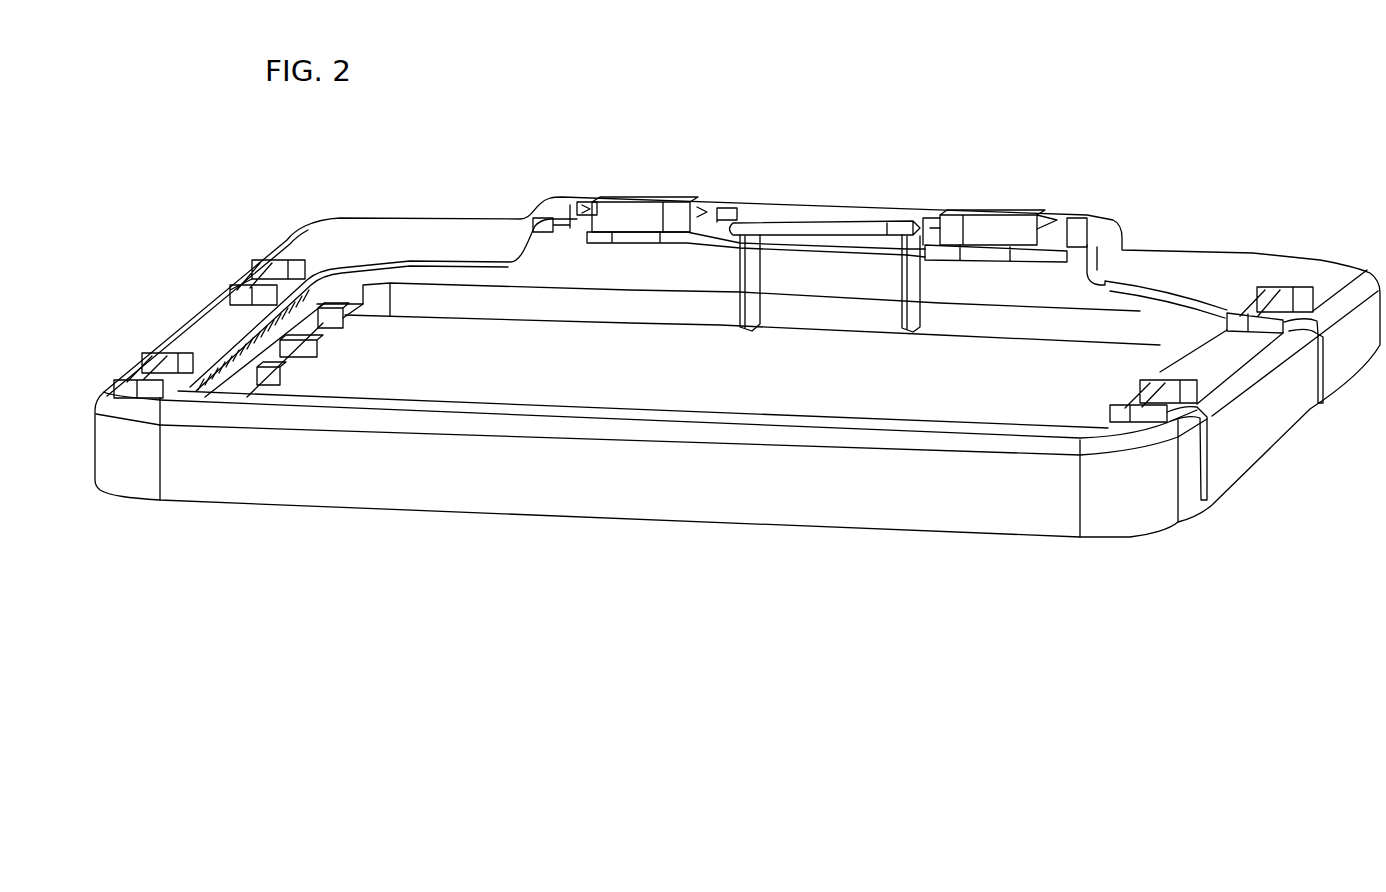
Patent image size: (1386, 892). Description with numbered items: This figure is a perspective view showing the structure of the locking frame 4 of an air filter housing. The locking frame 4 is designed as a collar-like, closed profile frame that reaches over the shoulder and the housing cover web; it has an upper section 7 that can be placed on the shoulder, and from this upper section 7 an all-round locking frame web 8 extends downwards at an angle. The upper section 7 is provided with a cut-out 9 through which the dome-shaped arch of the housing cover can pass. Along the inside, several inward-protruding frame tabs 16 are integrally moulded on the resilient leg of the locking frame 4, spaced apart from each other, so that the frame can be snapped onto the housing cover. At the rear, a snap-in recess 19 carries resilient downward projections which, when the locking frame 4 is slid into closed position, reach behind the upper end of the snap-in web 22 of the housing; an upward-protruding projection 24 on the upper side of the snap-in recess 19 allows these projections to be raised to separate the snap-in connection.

The locking frame 4 is at (538, 485).
The upper section 7 is at (1209, 272).
The locking frame web 8 is at (793, 493).
The cut-out 9 is at (1150, 289).
The frame tabs 16 is at (282, 375).
The snap-in recess 19 is at (838, 215).
The snap-in web 22 is at (650, 233).
The projection 24 is at (625, 218).